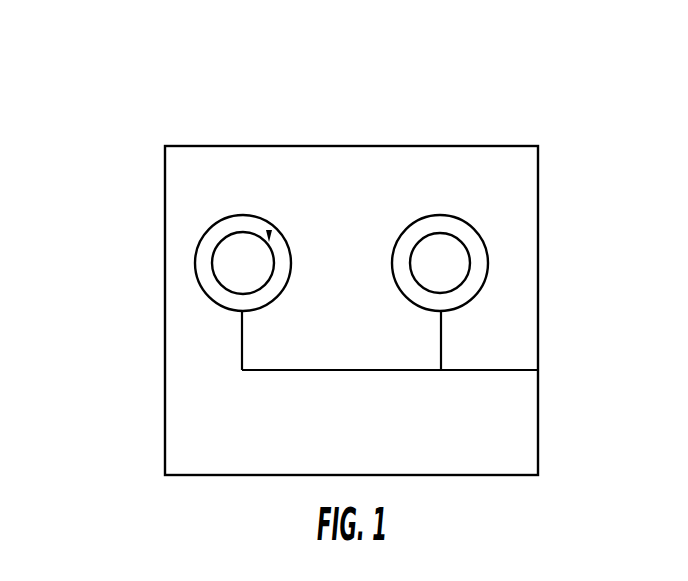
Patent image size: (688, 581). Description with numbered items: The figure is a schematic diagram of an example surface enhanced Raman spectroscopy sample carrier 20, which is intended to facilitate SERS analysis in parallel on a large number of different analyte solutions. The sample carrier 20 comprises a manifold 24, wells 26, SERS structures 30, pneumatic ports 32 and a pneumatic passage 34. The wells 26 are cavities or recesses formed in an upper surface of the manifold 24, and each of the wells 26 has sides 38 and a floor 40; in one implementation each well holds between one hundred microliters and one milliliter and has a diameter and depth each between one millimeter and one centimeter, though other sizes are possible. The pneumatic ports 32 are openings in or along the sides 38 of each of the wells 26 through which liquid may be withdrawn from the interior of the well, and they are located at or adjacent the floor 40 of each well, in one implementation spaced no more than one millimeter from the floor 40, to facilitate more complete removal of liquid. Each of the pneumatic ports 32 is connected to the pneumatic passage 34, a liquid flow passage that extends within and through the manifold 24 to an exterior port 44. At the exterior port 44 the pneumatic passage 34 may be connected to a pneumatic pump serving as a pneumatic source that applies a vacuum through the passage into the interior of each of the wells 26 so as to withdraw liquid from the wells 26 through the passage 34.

The SERS sample carrier 20 is at (150, 85).
The manifold 24 is at (402, 146).
The wells 26 is at (207, 219).
The SERS structures 30 is at (217, 248).
The pneumatic ports 32 is at (234, 312).
The pneumatic passage 34 is at (483, 370).
The sides 38 is at (269, 236).
The floor 40 is at (205, 268).
The exterior port 44 is at (537, 370).